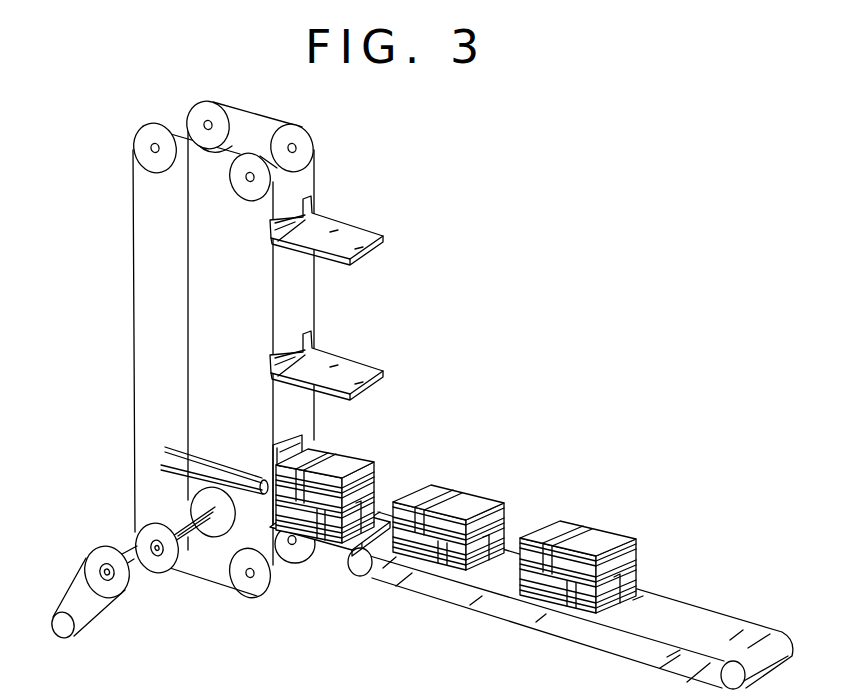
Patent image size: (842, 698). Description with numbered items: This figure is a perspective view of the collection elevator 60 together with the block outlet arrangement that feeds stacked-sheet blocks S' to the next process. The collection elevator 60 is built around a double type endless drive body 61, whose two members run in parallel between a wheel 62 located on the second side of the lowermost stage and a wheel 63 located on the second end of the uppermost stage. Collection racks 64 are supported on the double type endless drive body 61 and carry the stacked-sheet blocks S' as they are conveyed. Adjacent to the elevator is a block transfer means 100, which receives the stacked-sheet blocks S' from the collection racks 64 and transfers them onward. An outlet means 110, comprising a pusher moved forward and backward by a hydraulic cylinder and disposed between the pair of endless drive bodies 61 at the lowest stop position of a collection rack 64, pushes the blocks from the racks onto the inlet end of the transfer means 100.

The collection elevator 60 is at (241, 359).
The double type endless drive body 61 is at (310, 298).
The wheel 62 is at (158, 567).
The wheel 63 is at (312, 142).
The collection rack 64 is at (357, 233).
The block transfer means 100 is at (733, 584).
The outlet means 110 is at (254, 441).
The stacked-sheet block S' is at (350, 480).